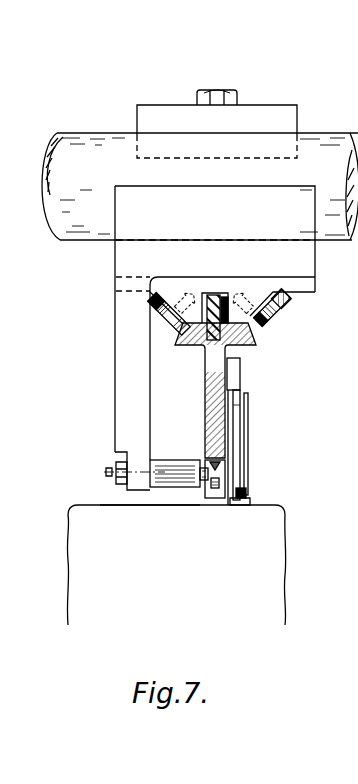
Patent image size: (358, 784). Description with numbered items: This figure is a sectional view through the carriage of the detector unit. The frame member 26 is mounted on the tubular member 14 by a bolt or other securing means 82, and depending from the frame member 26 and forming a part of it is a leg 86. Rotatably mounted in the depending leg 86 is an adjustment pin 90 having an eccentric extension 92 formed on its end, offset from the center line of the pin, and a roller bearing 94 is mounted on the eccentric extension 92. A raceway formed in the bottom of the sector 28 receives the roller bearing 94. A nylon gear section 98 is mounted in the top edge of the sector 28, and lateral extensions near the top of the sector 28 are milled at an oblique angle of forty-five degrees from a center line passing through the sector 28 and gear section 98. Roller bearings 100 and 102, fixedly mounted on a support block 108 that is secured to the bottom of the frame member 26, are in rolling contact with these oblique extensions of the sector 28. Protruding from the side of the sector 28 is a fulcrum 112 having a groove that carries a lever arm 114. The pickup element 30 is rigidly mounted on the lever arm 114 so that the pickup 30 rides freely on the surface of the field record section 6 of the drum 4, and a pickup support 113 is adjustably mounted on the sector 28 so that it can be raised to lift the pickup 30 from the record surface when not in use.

The drum 4 is at (167, 578).
The field record section 6 is at (100, 518).
The tubular member 14 is at (99, 232).
The frame member 26 is at (280, 133).
The sector 28 is at (225, 368).
The pickup element 30 is at (245, 500).
The bolt 82 is at (218, 98).
The leg 86 is at (120, 376).
The adjustment pin 90 is at (160, 460).
The eccentric extension 92 is at (206, 481).
The roller bearing 94 is at (217, 498).
The nylon gear section 98 is at (220, 294).
The roller bearing 100 is at (176, 330).
The roller bearing 102 is at (268, 316).
The support block 108 is at (303, 287).
The fulcrum 112 is at (248, 473).
The pickup support 113 is at (241, 376).
The lever arm 114 is at (241, 450).